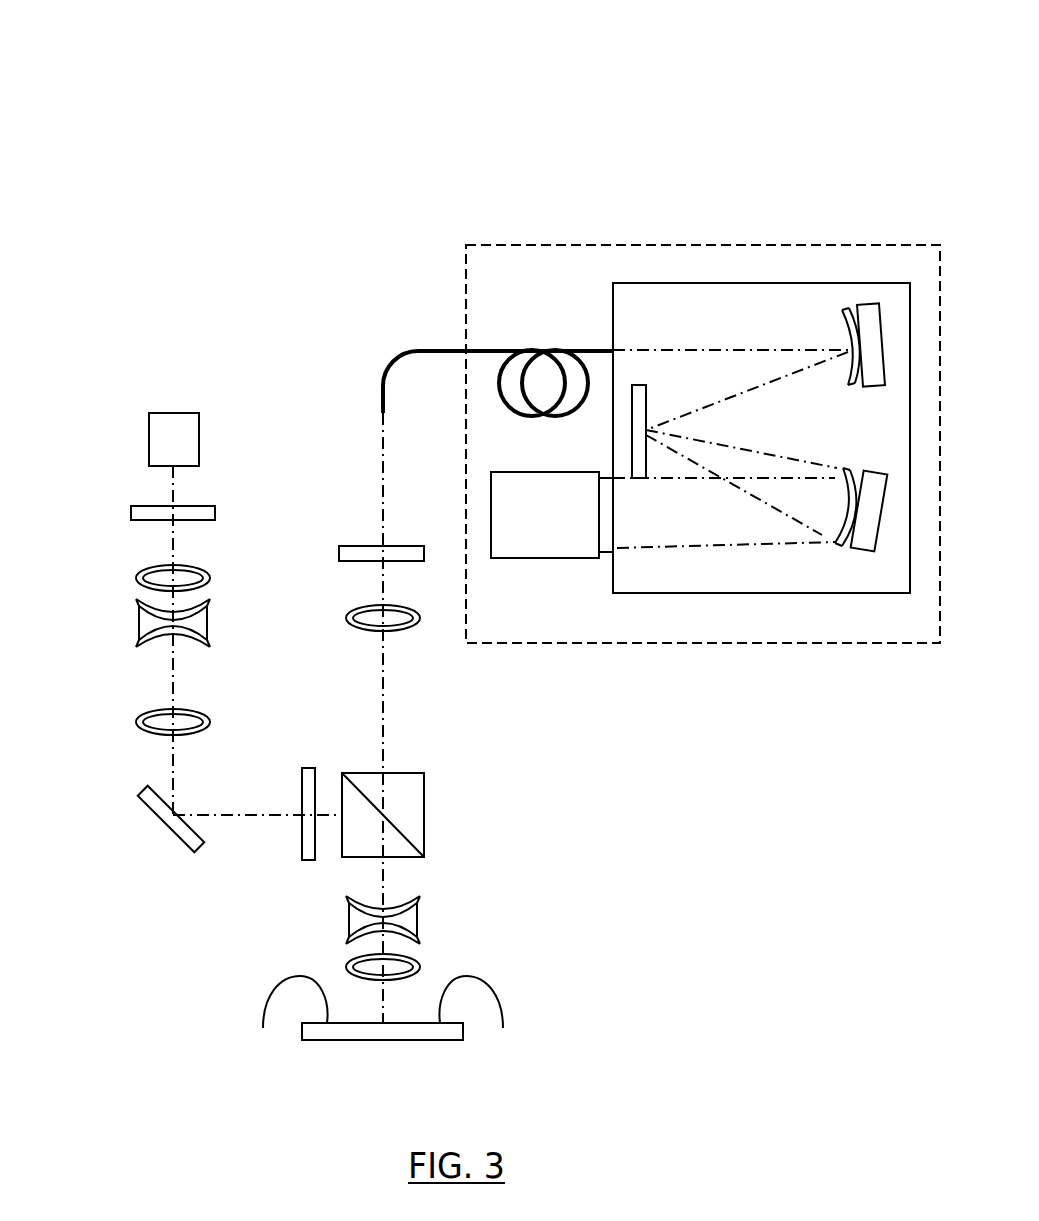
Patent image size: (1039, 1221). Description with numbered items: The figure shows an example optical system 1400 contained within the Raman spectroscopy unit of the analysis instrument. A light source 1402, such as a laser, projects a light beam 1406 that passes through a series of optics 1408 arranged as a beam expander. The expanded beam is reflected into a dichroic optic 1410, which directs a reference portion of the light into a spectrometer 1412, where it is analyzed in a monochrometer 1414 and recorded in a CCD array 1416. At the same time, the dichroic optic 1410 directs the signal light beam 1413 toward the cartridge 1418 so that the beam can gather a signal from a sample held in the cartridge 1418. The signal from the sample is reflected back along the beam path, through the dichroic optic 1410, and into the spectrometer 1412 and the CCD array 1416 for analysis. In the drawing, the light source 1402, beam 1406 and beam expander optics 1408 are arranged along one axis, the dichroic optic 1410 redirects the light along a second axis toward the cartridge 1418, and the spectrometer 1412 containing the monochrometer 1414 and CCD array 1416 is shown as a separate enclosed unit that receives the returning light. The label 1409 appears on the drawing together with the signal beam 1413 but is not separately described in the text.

The optical system 1400 is at (182, 168).
The light source 1402 is at (149, 438).
The light beam 1406 is at (173, 487).
The series of optics 1408 is at (128, 558).
The dichroic beam splitter 1409 is at (387, 787).
The dichroic optic 1410 is at (424, 818).
The spectrometer 1412 is at (466, 290).
The signal light beam 1413 is at (383, 877).
The monochrometer 1414 is at (765, 593).
The CCD array 1416 is at (545, 558).
The cartridge 1418 is at (240, 993).